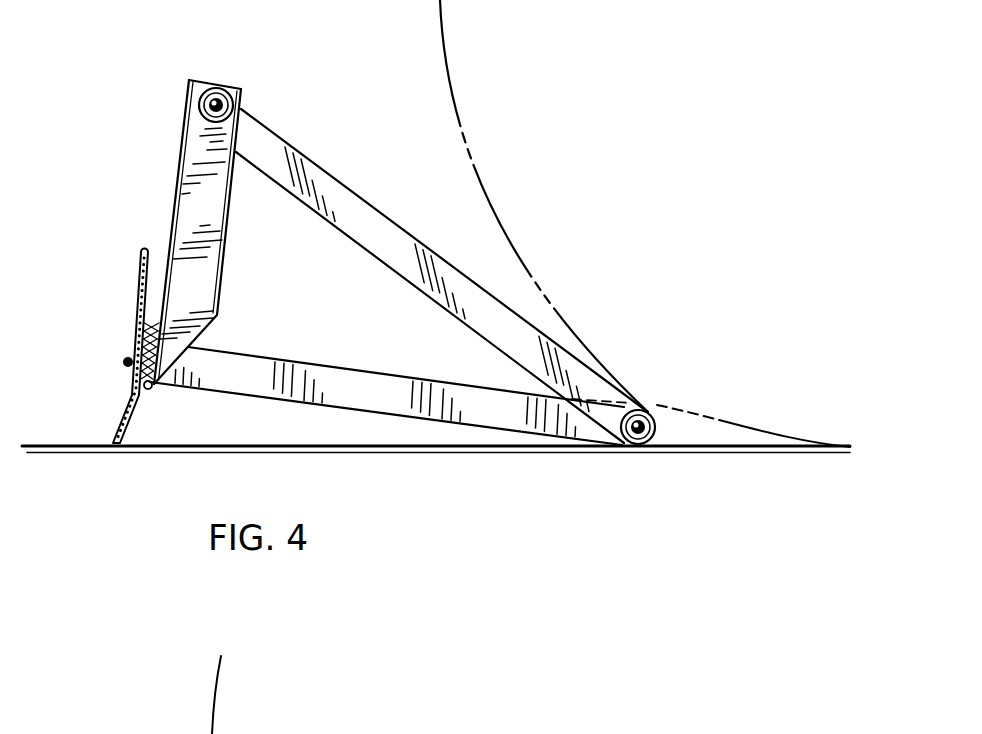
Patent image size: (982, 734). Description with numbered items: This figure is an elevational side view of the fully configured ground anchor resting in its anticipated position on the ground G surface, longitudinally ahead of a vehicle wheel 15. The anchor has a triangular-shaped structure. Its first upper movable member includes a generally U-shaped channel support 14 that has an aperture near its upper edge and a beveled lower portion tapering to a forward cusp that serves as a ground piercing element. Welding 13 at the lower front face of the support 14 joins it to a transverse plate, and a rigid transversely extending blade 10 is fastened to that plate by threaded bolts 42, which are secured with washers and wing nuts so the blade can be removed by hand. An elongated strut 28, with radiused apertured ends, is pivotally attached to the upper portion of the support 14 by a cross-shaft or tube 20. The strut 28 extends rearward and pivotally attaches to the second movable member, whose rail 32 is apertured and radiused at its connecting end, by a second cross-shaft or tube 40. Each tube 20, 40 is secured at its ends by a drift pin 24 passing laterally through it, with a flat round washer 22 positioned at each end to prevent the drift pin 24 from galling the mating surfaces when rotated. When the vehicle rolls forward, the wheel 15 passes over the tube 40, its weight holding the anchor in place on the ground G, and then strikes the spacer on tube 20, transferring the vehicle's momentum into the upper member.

The blade 10 is at (142, 262).
The welding 13 is at (144, 387).
The first side vertical strut, pylon, or support 14 is at (195, 213).
The vehicle wheel 15 is at (500, 232).
The cross-shaft, or tube 20 is at (221, 92).
The flat round spacer, or washer 22 is at (233, 145).
The clip, or drift pin 24 is at (207, 126).
The first connector, link, or strut 28 is at (360, 214).
The first rail 32 is at (237, 373).
The cross-shaft, or tube 40 is at (655, 445).
The threaded bolt 42 is at (127, 362).
The ground G is at (768, 447).